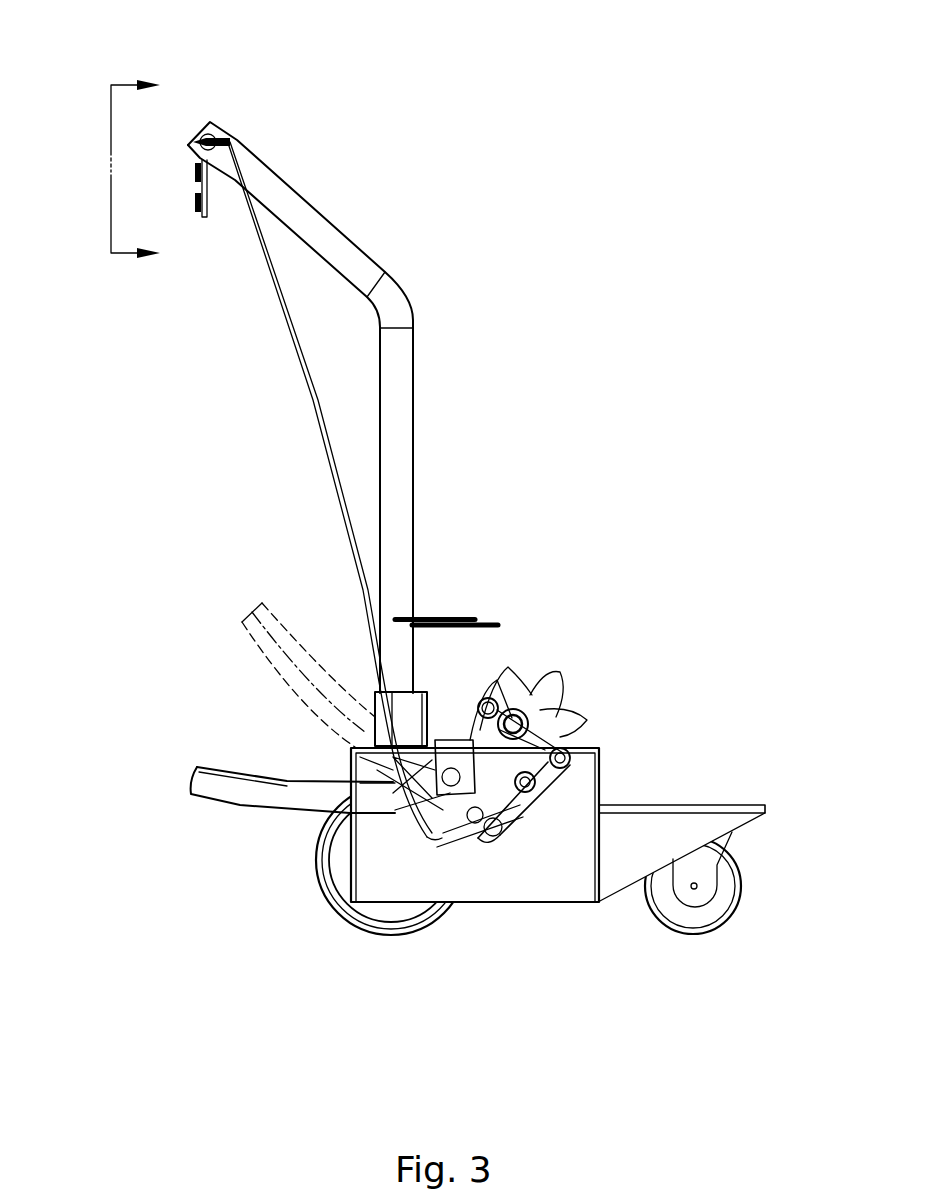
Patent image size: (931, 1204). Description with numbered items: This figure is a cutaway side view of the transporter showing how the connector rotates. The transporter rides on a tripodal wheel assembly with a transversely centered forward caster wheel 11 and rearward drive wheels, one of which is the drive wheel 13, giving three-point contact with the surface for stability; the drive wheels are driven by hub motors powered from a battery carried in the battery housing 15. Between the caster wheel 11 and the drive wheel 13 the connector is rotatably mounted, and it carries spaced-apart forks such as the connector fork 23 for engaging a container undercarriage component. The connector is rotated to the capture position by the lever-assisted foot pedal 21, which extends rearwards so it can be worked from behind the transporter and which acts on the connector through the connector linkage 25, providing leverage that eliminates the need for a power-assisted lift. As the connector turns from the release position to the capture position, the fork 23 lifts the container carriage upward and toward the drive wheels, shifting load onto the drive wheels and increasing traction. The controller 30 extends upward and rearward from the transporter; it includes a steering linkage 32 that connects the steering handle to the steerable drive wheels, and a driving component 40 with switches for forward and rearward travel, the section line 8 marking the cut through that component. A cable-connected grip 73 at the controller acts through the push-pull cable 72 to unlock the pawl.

The section line 8- 8 is at (138, 167).
The caster wheel 11 is at (738, 903).
The drive wheel 13 is at (323, 882).
The battery housing 15 is at (547, 903).
The foot pedal 21 is at (237, 807).
The connector fork 23 is at (574, 712).
The connector linkage 25 is at (535, 797).
The controller 30 is at (347, 180).
The steering linkage 32 is at (428, 613).
The driving component 40 is at (150, 190).
The push-pull cable 72 is at (322, 433).
The cable-connected grip 73 is at (252, 138).